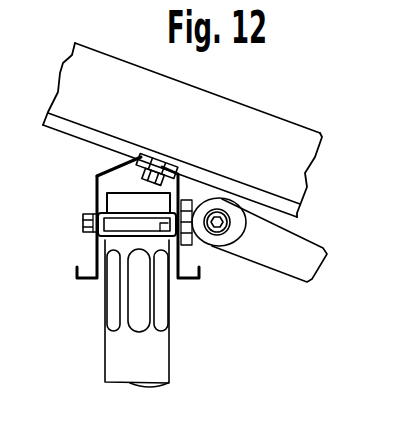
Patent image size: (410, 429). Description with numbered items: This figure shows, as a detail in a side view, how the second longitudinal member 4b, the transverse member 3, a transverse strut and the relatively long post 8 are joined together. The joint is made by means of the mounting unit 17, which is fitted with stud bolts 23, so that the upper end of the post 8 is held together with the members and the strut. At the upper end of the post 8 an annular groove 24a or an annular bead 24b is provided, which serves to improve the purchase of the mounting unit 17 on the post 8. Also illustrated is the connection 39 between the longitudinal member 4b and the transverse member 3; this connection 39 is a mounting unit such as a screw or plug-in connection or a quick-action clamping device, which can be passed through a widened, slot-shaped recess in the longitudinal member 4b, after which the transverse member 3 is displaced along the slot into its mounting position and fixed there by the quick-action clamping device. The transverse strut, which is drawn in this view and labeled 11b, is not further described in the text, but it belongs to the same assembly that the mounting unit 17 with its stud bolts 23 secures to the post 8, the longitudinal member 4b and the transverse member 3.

The transverse member 3 is at (283, 143).
The connection 39 is at (172, 165).
The mounting unit 17 is at (118, 211).
The second longitudinal member 4b is at (95, 247).
The stud bolts 23 is at (83, 222).
The annular groove 24a is at (140, 220).
The annular bead 24b is at (166, 222).
The lever arm 11b is at (271, 250).
The relatively long post 8 is at (155, 369).